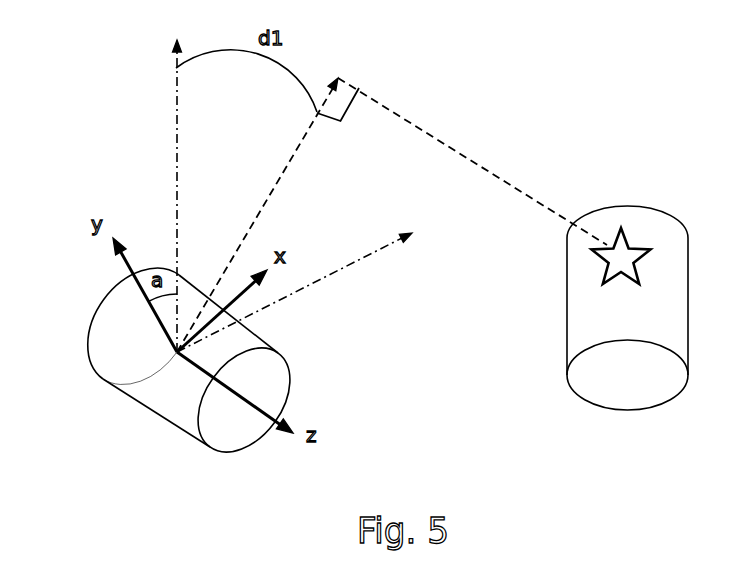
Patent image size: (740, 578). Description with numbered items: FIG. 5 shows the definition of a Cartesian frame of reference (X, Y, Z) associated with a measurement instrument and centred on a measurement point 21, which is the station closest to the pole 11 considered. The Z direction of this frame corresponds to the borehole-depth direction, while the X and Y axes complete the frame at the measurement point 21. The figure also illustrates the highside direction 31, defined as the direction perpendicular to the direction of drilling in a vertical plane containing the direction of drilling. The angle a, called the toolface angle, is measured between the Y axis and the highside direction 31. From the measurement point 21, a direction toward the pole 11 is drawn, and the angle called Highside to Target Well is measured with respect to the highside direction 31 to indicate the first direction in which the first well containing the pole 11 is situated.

The pole 11 is at (628, 243).
The measurement point 21 is at (114, 374).
The highside direction 31 is at (177, 183).